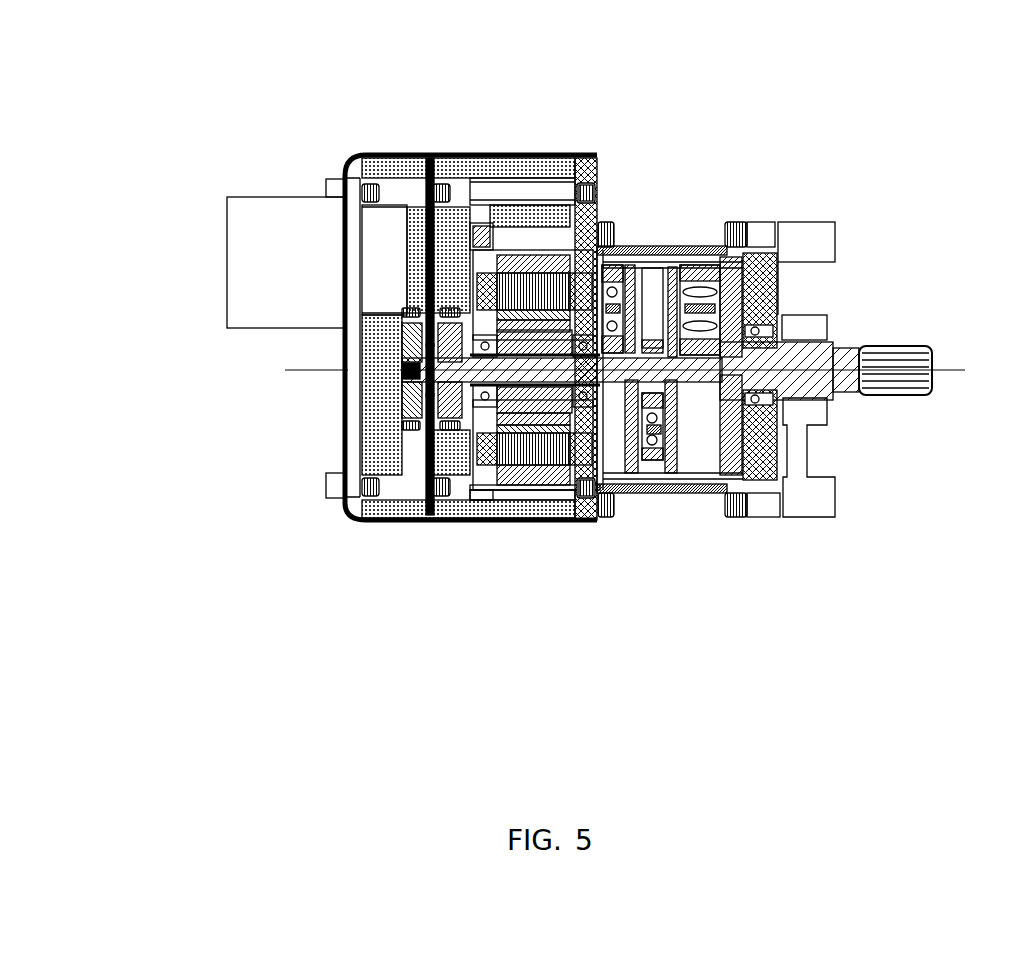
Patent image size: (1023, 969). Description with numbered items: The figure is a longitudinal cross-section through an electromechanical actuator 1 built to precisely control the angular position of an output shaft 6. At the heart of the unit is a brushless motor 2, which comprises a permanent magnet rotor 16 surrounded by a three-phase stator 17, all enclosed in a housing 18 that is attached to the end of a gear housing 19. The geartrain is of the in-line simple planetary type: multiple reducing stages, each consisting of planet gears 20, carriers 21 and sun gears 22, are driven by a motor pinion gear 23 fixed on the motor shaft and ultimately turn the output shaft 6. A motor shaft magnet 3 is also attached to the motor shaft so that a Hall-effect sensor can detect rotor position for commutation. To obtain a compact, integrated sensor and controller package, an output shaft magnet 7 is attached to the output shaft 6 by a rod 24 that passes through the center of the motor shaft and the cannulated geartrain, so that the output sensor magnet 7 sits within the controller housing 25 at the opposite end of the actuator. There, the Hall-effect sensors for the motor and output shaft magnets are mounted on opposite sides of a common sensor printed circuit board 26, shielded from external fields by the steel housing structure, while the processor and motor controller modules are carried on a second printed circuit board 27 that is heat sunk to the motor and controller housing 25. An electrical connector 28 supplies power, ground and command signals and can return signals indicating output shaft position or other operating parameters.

The electromechanical actuator 1 is at (313, 408).
The brushless motor 2 is at (600, 175).
The motor shaft magnet 3 is at (440, 452).
The output shaft 6 is at (898, 342).
The output shaft magnet 7 is at (405, 420).
The permanent magnet rotor 16 is at (492, 488).
The three-phase stator 17 is at (585, 497).
The housing 18 is at (493, 250).
The gear housing 19 is at (665, 253).
The planet gears 20 is at (655, 470).
The carriers 21 is at (630, 470).
The sun gears 22 is at (743, 513).
The motor pinion gear 23 is at (598, 517).
The rod 24 is at (778, 310).
The controller housing 25 is at (408, 157).
The common sensor printed circuit board 26 is at (430, 210).
The second printed circuit board 27 is at (535, 305).
The electrical connector 28 is at (290, 250).